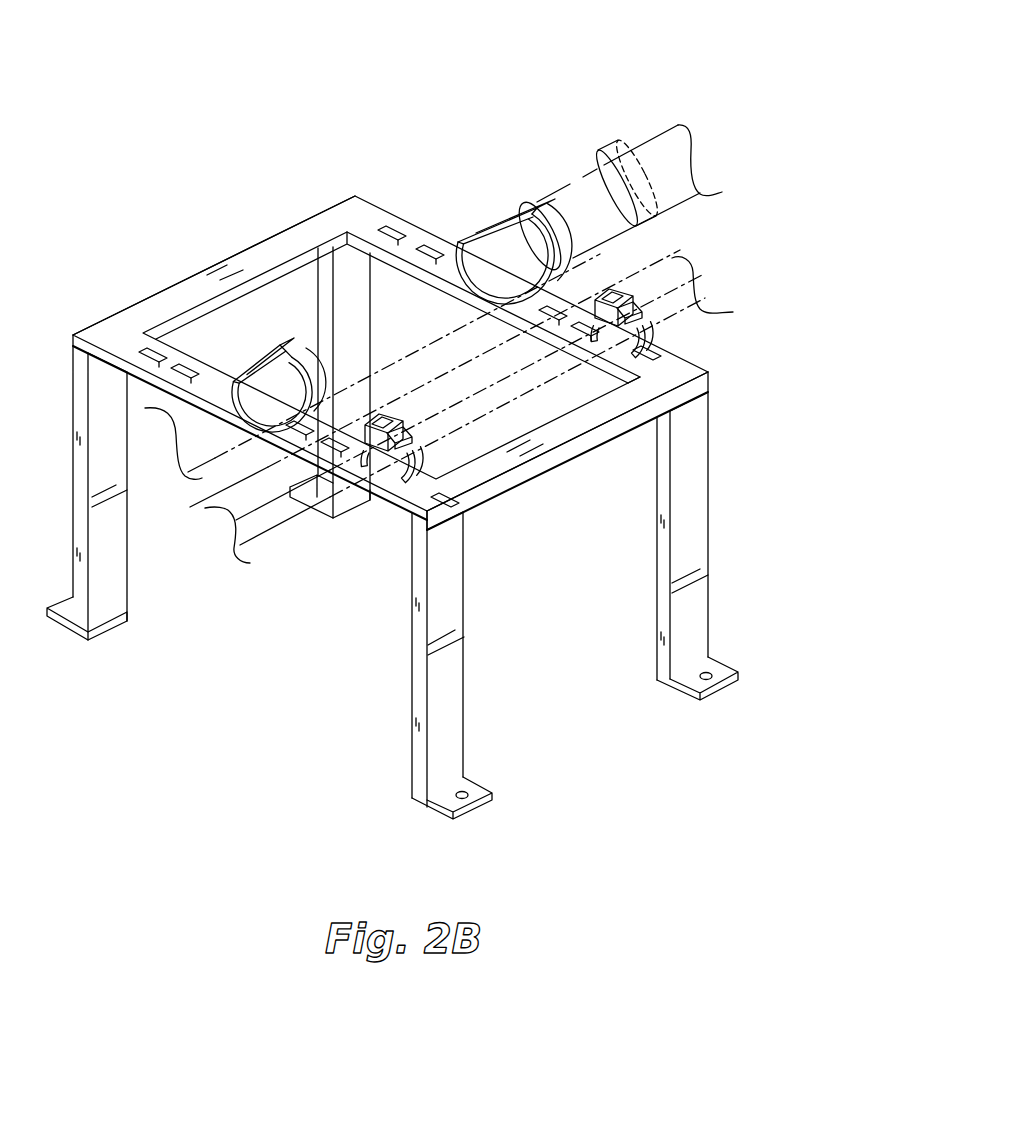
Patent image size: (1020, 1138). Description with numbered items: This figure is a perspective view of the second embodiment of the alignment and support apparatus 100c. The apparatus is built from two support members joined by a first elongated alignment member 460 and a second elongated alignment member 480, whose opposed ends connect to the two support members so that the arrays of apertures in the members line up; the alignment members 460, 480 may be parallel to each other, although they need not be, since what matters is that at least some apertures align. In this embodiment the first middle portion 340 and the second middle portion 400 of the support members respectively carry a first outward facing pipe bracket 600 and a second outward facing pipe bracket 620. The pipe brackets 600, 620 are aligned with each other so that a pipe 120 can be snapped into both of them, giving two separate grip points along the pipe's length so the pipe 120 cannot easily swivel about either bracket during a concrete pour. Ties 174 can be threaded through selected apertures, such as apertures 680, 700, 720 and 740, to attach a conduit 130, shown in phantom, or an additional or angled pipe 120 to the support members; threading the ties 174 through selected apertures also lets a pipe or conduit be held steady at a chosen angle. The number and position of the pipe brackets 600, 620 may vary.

The alignment and support apparatus 100c is at (176, 84).
The pipe 120 is at (583, 187).
The conduit 130 is at (744, 311).
The ties 174 is at (645, 352).
The first middle portion 340 is at (420, 218).
The second middle portion 400 is at (196, 509).
The first elongated alignment member 460 is at (268, 245).
The second elongated alignment member 480 is at (573, 428).
The first outward facing pipe bracket 600 is at (457, 242).
The second outward facing pipe bracket 620 is at (257, 347).
The aperture 680 is at (596, 325).
The aperture 700 is at (627, 383).
The aperture 720 is at (362, 486).
The aperture 740 is at (390, 505).